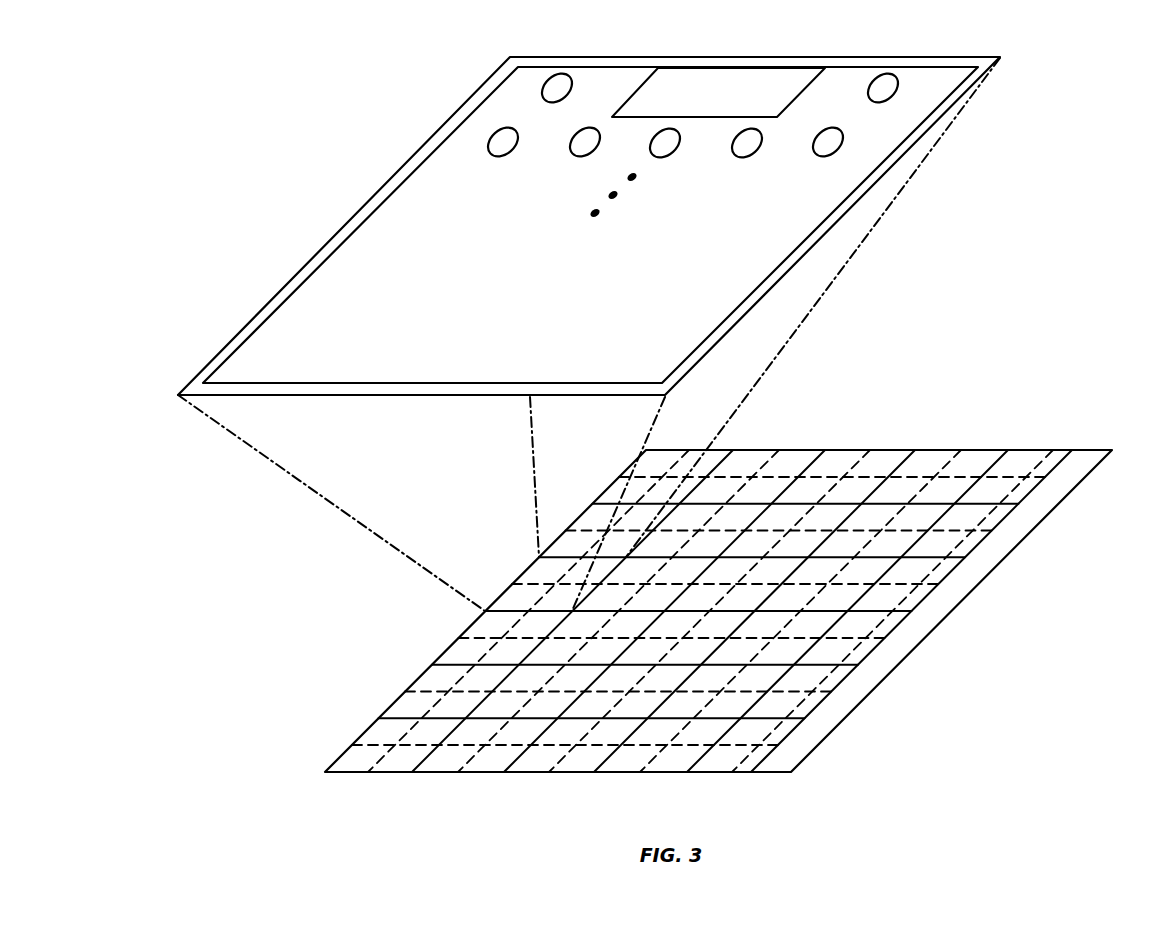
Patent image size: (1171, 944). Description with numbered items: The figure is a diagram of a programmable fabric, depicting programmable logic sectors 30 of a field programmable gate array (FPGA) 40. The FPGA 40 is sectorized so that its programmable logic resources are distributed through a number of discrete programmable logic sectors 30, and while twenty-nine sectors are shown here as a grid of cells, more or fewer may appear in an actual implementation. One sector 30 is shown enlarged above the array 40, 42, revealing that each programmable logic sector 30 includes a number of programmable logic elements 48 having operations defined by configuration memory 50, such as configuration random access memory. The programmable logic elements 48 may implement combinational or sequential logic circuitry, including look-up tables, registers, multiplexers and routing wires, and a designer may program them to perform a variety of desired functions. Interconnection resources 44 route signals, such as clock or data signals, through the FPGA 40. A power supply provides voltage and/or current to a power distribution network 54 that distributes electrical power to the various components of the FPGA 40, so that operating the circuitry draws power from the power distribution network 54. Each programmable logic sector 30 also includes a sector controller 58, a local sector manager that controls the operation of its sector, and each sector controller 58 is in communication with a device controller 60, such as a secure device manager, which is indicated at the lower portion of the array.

The programmable logic sector 30 is at (457, 72).
The field programmable gate array 40 is at (705, 577).
The grid 42 is at (705, 577).
The interconnection resources 44 is at (378, 196).
The programmable logic elements 48 is at (567, 76).
The configuration memory 50 is at (704, 126).
The power distribution network 54 is at (396, 728).
The sector controller 58 is at (743, 72).
The device controller 60 is at (558, 772).